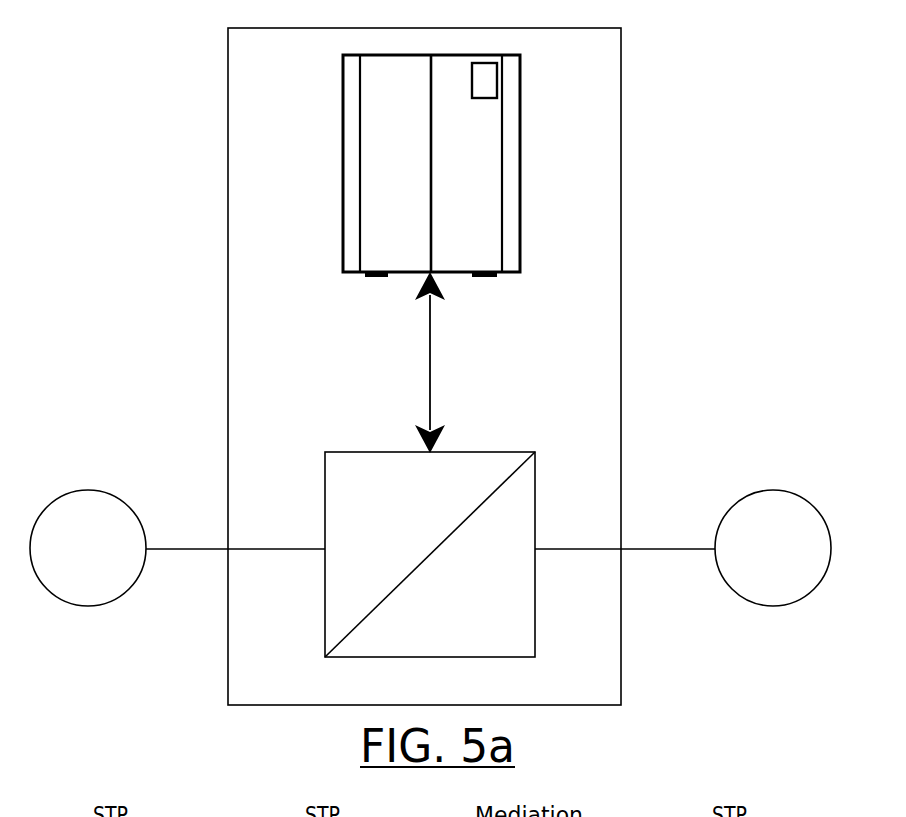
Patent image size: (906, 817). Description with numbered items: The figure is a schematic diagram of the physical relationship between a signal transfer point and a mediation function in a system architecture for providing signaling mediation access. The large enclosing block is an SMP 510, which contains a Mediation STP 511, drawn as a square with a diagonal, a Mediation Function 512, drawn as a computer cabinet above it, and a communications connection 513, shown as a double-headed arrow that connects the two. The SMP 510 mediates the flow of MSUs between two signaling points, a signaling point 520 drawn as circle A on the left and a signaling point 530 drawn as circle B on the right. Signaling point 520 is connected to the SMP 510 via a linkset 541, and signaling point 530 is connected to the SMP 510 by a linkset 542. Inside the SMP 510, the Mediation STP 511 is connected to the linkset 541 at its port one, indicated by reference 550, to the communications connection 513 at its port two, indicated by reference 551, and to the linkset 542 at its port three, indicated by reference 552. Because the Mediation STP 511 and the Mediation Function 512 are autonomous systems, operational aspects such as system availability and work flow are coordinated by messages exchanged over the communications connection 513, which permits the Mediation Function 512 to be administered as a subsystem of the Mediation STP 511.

The SMP 510 is at (228, 178).
The Mediation STP 511 is at (383, 450).
The Mediation Function 512 is at (357, 230).
The communications connection 513 is at (430, 378).
The signaling point 520 is at (84, 606).
The signaling point 530 is at (720, 520).
The linkset 541 is at (190, 550).
The linkset 542 is at (663, 548).
The port 1 550 is at (332, 547).
The port 2 551 is at (437, 477).
The port 3 552 is at (538, 553).